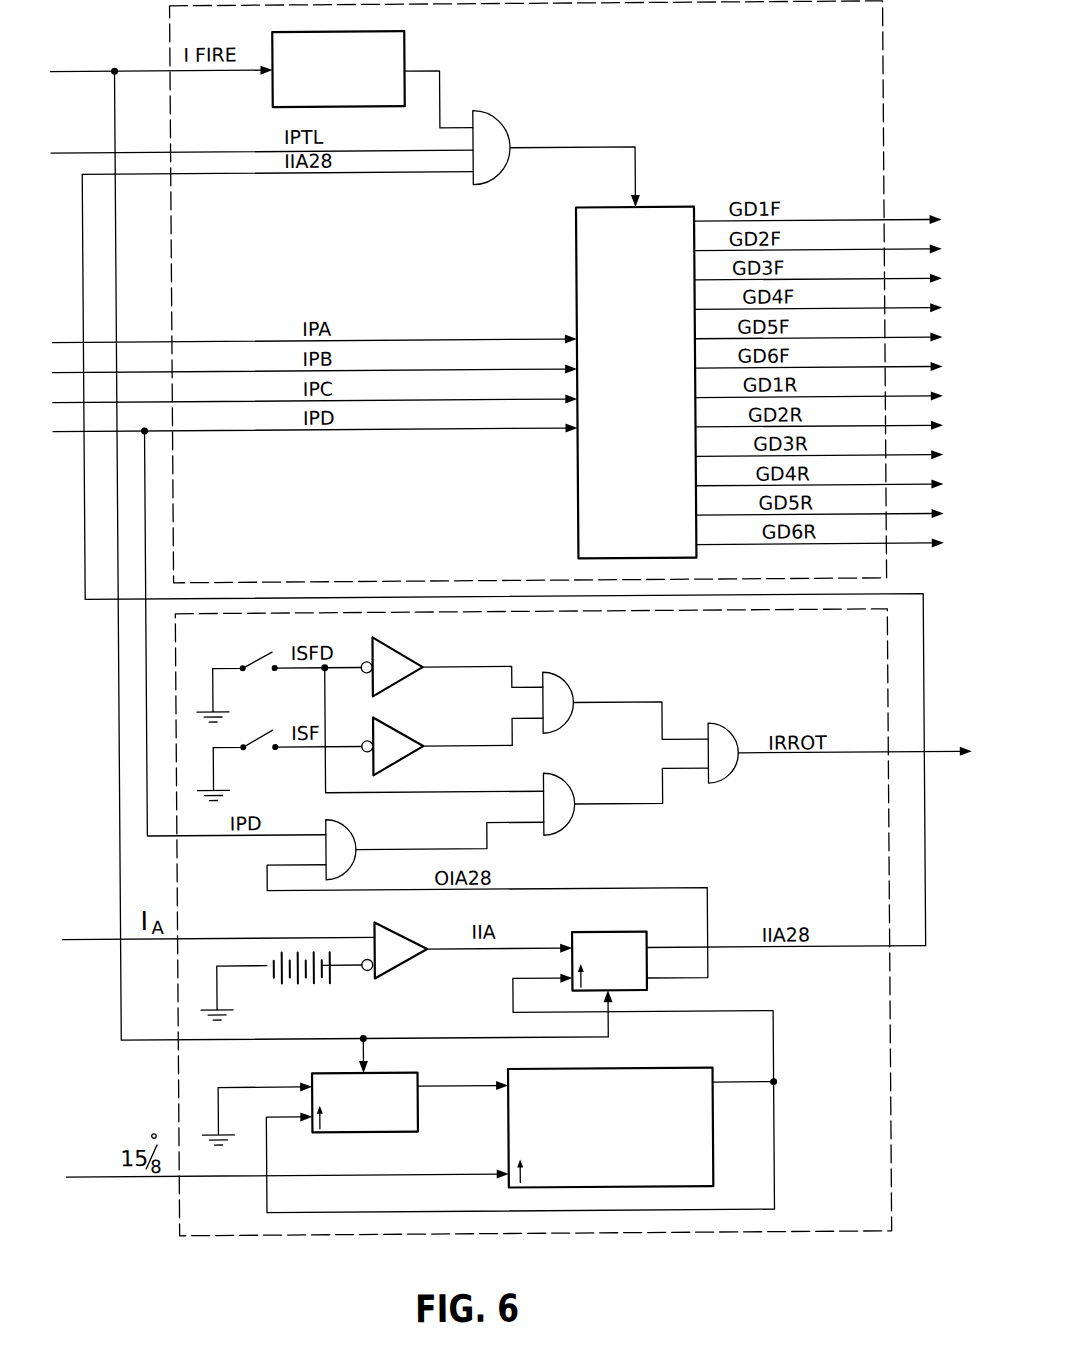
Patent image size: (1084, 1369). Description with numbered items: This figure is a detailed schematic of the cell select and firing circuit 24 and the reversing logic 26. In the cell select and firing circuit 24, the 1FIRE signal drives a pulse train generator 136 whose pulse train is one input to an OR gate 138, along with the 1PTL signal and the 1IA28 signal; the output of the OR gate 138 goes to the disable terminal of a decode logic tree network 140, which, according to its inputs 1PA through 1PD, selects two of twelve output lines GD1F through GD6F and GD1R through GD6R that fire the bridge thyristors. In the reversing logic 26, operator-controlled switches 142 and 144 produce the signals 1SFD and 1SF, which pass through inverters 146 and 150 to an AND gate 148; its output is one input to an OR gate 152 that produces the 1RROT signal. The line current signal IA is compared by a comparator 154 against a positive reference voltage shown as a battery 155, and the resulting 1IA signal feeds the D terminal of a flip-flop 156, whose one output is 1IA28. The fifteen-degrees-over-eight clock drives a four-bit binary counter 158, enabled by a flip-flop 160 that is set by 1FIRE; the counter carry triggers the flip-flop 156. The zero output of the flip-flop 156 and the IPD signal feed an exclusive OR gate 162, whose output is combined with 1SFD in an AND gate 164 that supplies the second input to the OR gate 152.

The cell select and firing circuit 24 is at (883, 81).
The reversing logic 26 is at (890, 1018).
The pulse train generator 136 is at (405, 47).
The OR gate 138 is at (497, 117).
The decode logic tree network 140 is at (574, 234).
The switch 142 is at (251, 651).
The switch 144 is at (257, 739).
The inverter 146 is at (403, 655).
The AND gate 148 is at (572, 686).
The inverter 150 is at (403, 729).
The OR gate 152 is at (725, 727).
The comparator 154 is at (401, 942).
The battery 155 is at (318, 998).
The flip-flop 156 is at (638, 936).
The 4-bit binary counter 158 is at (708, 1071).
The flip-flop 160 is at (410, 1109).
The exclusive OR gate 162 is at (352, 840).
The AND gate 164 is at (572, 788).